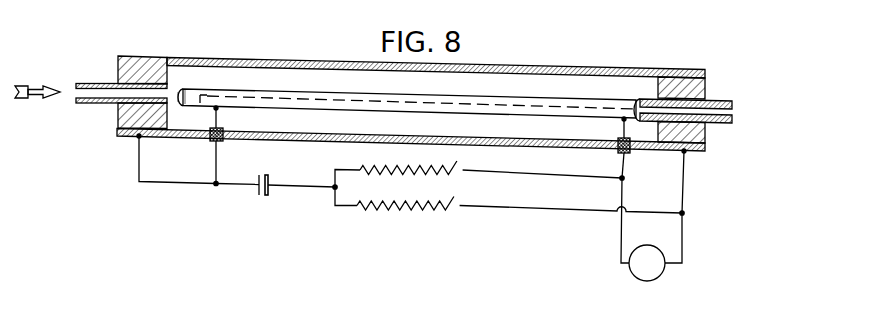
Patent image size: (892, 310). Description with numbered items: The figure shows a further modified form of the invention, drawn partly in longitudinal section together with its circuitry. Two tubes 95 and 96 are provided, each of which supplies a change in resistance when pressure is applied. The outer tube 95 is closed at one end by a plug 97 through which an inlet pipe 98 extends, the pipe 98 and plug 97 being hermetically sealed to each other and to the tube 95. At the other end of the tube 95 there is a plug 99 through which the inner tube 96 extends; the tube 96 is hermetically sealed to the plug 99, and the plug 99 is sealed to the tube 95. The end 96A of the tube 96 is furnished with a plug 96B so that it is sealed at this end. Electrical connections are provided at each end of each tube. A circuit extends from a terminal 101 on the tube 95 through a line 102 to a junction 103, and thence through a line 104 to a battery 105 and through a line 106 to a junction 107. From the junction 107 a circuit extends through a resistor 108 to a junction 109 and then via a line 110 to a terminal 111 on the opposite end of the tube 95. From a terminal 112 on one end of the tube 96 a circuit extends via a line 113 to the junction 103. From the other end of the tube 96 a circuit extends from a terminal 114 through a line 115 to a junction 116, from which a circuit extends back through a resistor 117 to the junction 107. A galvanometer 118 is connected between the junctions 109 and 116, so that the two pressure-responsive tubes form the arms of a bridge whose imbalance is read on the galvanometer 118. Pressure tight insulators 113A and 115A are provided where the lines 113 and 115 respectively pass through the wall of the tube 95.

The tube 95 is at (245, 56).
The tube 96 is at (330, 92).
The end of the tube 96A is at (172, 100).
The plug 96B is at (183, 95).
The plug 97 is at (118, 77).
The inlet pipe 98 is at (107, 103).
The plug 99 is at (705, 84).
The terminal 101 is at (137, 141).
The line 102 is at (168, 175).
The junction 103 is at (216, 186).
The line 104 is at (242, 186).
The battery 105 is at (266, 177).
The line 106 is at (307, 185).
The junction 107 is at (337, 187).
The resistor 108 is at (402, 212).
The junction 109 is at (684, 213).
The line 110 is at (683, 192).
The terminal 111 is at (685, 153).
The terminal 112 is at (217, 116).
The line 113 is at (215, 176).
The pressure tight insulator 113A is at (217, 141).
The terminal 114 is at (622, 122).
The line 115 is at (624, 170).
The pressure tight insulator 115A is at (617, 151).
The junction 116 is at (624, 180).
The resistor 117 is at (440, 172).
The galvanometer 118 is at (638, 278).